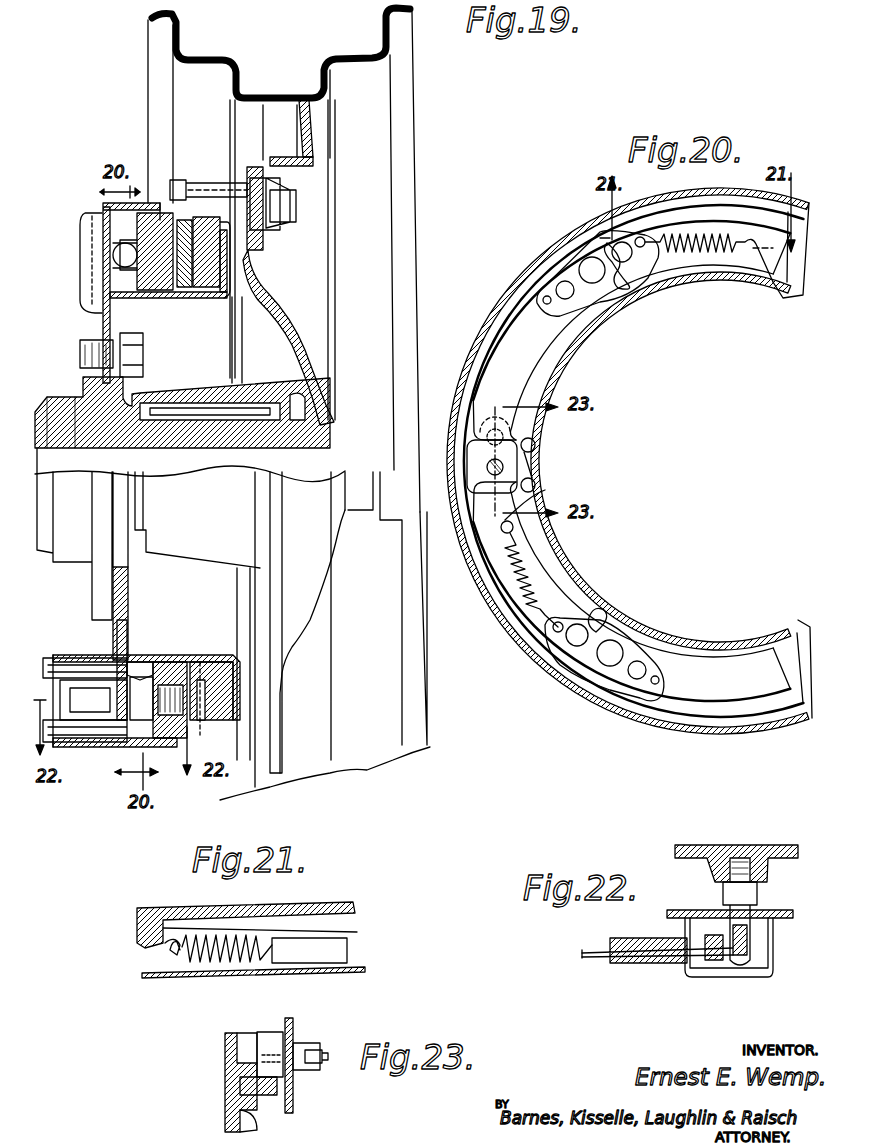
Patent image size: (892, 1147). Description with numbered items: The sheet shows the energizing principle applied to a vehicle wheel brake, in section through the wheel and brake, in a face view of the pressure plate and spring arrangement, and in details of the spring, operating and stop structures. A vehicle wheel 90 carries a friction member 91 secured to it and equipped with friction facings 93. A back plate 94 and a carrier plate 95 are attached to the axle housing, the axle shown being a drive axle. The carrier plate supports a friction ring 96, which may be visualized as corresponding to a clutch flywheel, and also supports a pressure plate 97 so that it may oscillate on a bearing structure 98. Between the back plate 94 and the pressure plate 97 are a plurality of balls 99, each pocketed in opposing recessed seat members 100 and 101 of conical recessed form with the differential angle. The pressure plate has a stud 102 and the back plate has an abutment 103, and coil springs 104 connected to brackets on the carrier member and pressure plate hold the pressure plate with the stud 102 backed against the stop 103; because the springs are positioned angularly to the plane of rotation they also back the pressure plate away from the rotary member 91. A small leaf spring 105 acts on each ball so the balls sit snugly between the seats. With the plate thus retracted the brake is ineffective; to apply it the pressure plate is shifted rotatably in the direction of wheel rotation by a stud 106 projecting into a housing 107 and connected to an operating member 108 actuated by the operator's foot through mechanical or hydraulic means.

In FIG. 19, the vehicle wheel 90 is at (302, 298).
In FIG. 19, the friction member 91 is at (178, 180).
In FIG. 19, the friction facings 93 is at (214, 298).
In FIG. 19, the back plate 94 is at (84, 213).
In FIG. 21, the back plate 94 is at (160, 980).
In FIG. 23, the back plate 94 is at (293, 1095).
In FIG. 22, the back plate 94 is at (700, 910).
In FIG. 19, the carrier plate 95 is at (238, 300).
In FIG. 20, the carrier plate 95 is at (540, 373).
In FIG. 19, the friction ring 96 is at (262, 240).
In FIG. 19, the pressure plate 97 is at (156, 208).
In FIG. 20, the pressure plate 97 is at (548, 350).
In FIG. 21, the pressure plate 97 is at (330, 905).
In FIG. 23, the pressure plate 97 is at (225, 1062).
In FIG. 22, the pressure plate 97 is at (698, 845).
In FIG. 19, the bearing structure 98 is at (180, 296).
In FIG. 19, the balls 99 is at (115, 262).
In FIG. 19, the seat member 100 is at (112, 250).
In FIG. 19, the seat member 101 is at (168, 292).
In FIG. 20, the stud 102 is at (505, 470).
In FIG. 23, the stud 102 is at (280, 1097).
In FIG. 20, the abutment 103 is at (530, 432).
In FIG. 23, the abutment 103 is at (273, 1032).
In FIG. 20, the coil springs 104 is at (718, 262).
In FIG. 21, the coil springs 104 is at (232, 965).
In FIG. 20, the leaf spring 105 is at (632, 297).
In FIG. 19, the stud 106 is at (128, 656).
In FIG. 19, the housing 107 is at (88, 747).
In FIG. 22, the housing 107 is at (773, 965).
In FIG. 22, the operating member 108 is at (598, 962).